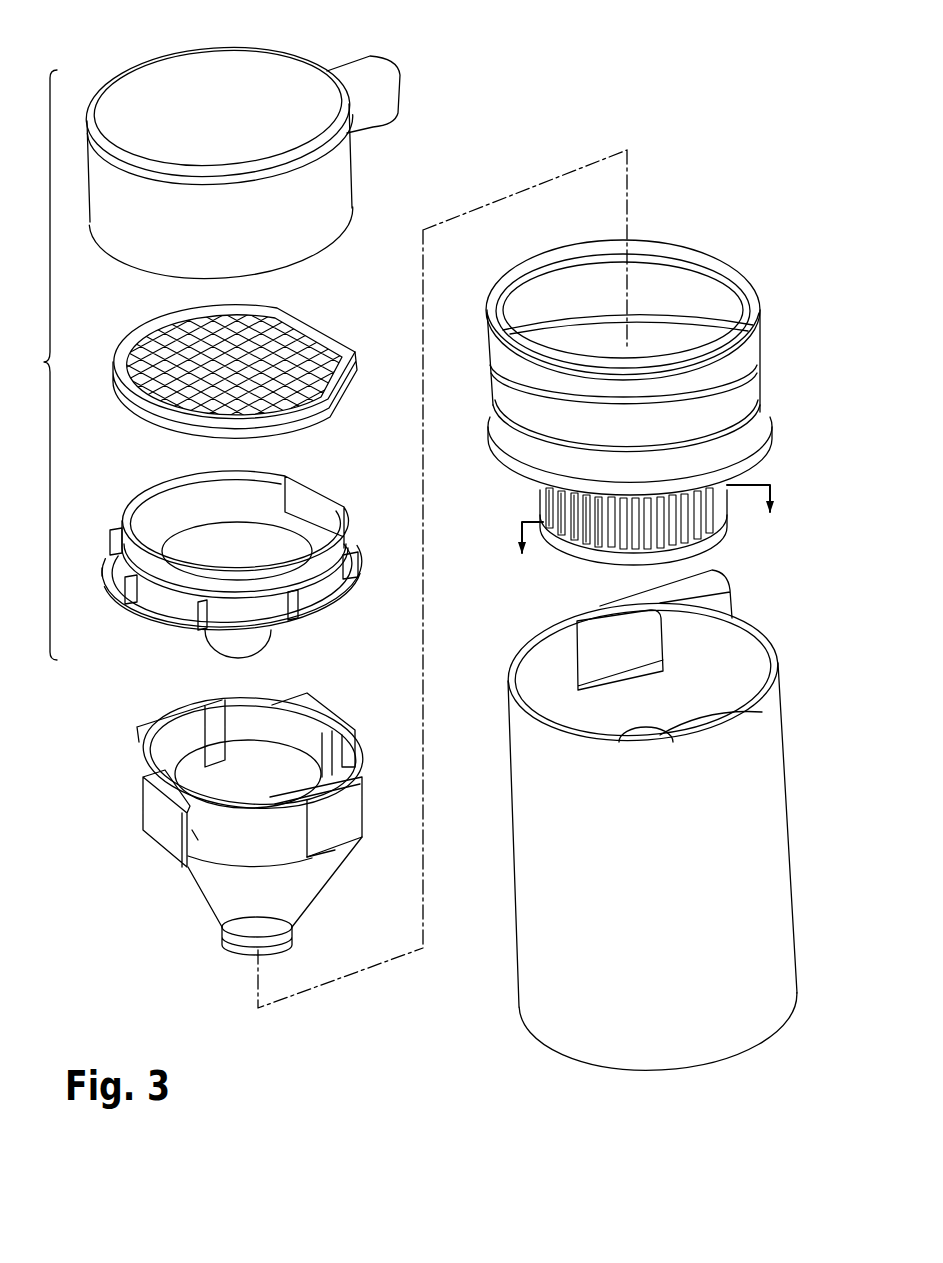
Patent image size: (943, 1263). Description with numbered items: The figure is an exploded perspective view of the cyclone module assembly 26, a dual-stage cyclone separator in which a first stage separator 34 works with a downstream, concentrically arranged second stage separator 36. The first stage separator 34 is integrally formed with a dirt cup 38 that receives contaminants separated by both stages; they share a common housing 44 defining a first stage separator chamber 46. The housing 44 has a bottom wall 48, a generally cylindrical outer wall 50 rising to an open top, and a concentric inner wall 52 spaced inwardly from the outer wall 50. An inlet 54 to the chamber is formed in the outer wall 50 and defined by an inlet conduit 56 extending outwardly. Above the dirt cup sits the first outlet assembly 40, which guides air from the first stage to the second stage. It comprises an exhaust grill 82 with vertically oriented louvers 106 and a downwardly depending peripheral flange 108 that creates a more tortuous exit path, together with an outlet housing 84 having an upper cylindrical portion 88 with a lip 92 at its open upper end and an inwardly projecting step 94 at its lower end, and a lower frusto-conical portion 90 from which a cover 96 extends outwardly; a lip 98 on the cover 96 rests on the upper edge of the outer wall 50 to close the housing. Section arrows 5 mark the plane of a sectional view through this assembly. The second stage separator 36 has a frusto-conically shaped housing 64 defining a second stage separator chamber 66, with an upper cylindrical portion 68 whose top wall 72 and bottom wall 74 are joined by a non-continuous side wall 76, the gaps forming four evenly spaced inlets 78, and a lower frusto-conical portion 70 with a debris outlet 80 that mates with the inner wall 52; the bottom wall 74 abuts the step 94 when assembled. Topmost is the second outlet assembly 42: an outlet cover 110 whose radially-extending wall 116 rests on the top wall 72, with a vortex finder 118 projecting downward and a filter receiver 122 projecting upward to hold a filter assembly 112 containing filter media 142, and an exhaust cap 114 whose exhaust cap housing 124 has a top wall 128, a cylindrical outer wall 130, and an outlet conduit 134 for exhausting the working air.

The cyclone module assembly 26 is at (571, 38).
The second outlet assembly 42 is at (217, 333).
The exhaust cap 114 is at (247, 143).
The top wall 128 is at (212, 72).
The outer wall 130 is at (333, 170).
The exhaust cap housing 124 is at (313, 253).
The outlet conduit 134 is at (358, 72).
The filter assembly 112 is at (217, 359).
The filter media 142 is at (297, 348).
The outlet cover 110 is at (234, 553).
The filter receiver 122 is at (165, 603).
The radially-extending wall 116 is at (357, 590).
The vortex finder 118 is at (257, 643).
The second stage separator 36 is at (224, 822).
The upper cylindrical portion 68 is at (240, 693).
The second stage separator chamber 66 is at (261, 795).
The top wall 72 is at (173, 718).
The housing 64 is at (353, 767).
The side wall 76 is at (170, 838).
The inlets 78 is at (140, 747).
The bottom wall 74 is at (333, 847).
The lower frusto-conical portion 70 is at (287, 897).
The debris outlet 80 is at (247, 952).
The first outlet assembly 40 is at (628, 395).
The outlet housing 84 is at (628, 347).
The lip 92 is at (665, 252).
The step 94 is at (722, 337).
The upper cylindrical portion 88 is at (492, 378).
The lower frusto-conical portion 90 is at (567, 453).
The cover 96 is at (757, 417).
The lip 98 is at (748, 462).
The exhaust grill 82 is at (587, 547).
The peripheral flange 108 is at (567, 552).
The louvers 106 is at (638, 535).
The section line 5- 5 is at (646, 529).
The first stage separator 34 is at (640, 833).
The first stage separator chamber 46 is at (714, 698).
The housing 44 is at (513, 902).
The dirt cup 38 is at (798, 950).
The outer wall 50 is at (743, 882).
The bottom wall 48 is at (717, 1060).
The inlet conduit 56 is at (730, 597).
The inlet 54 is at (634, 663).
The inner wall 52 is at (745, 716).